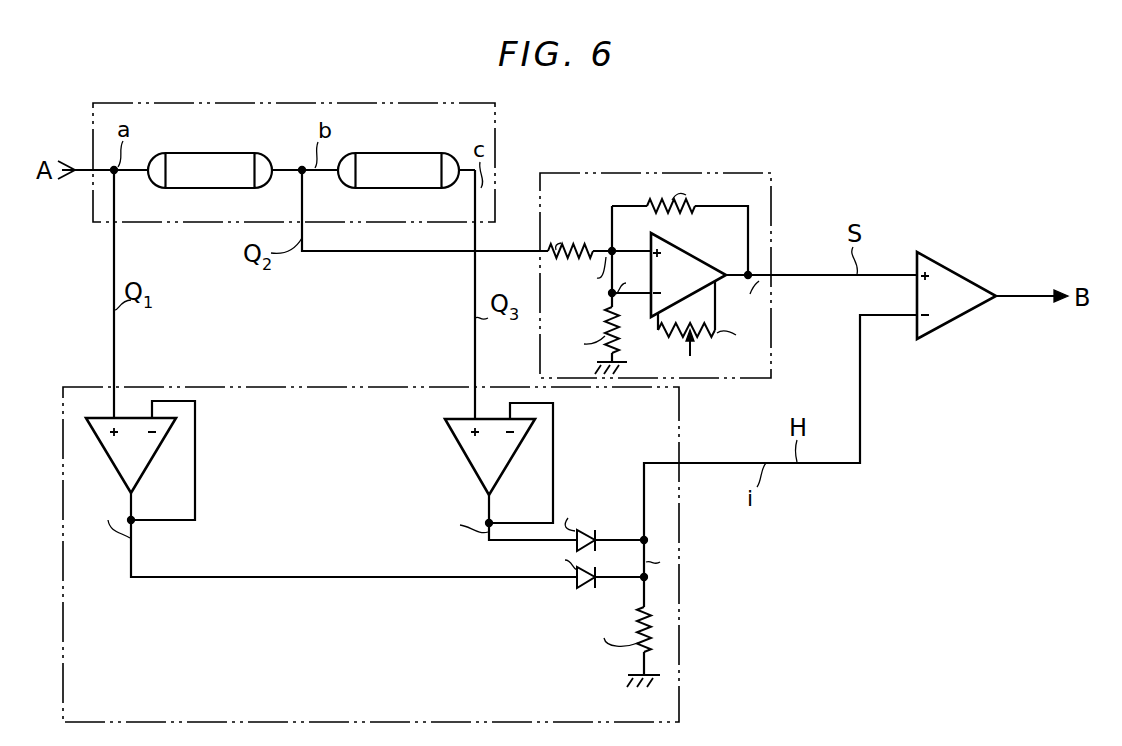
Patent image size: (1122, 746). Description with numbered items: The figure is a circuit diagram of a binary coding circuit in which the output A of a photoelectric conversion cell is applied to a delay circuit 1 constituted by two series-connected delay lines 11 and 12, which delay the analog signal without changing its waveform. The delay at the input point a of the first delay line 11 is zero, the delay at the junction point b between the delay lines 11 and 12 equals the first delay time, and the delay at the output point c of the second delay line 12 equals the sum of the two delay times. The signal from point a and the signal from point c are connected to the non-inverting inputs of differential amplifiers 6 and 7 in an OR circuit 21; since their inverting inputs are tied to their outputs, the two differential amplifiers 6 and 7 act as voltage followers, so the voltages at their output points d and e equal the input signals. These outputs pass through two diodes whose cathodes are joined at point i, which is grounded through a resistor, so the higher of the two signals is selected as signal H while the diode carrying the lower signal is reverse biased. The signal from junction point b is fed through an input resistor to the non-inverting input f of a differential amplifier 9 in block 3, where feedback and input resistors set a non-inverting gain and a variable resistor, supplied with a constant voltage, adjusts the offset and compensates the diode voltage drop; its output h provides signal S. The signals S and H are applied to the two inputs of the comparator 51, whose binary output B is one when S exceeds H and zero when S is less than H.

The delay circuit 1 is at (147, 103).
The delay line 11 is at (257, 155).
The delay line 12 is at (445, 155).
The differential amplifier circuit 3 is at (752, 173).
The differential amplifier 9 is at (699, 259).
The comparator 51 is at (957, 274).
The OR circuit 21 is at (258, 387).
The differential amplifier 6 is at (148, 465).
The differential amplifier 7 is at (504, 470).